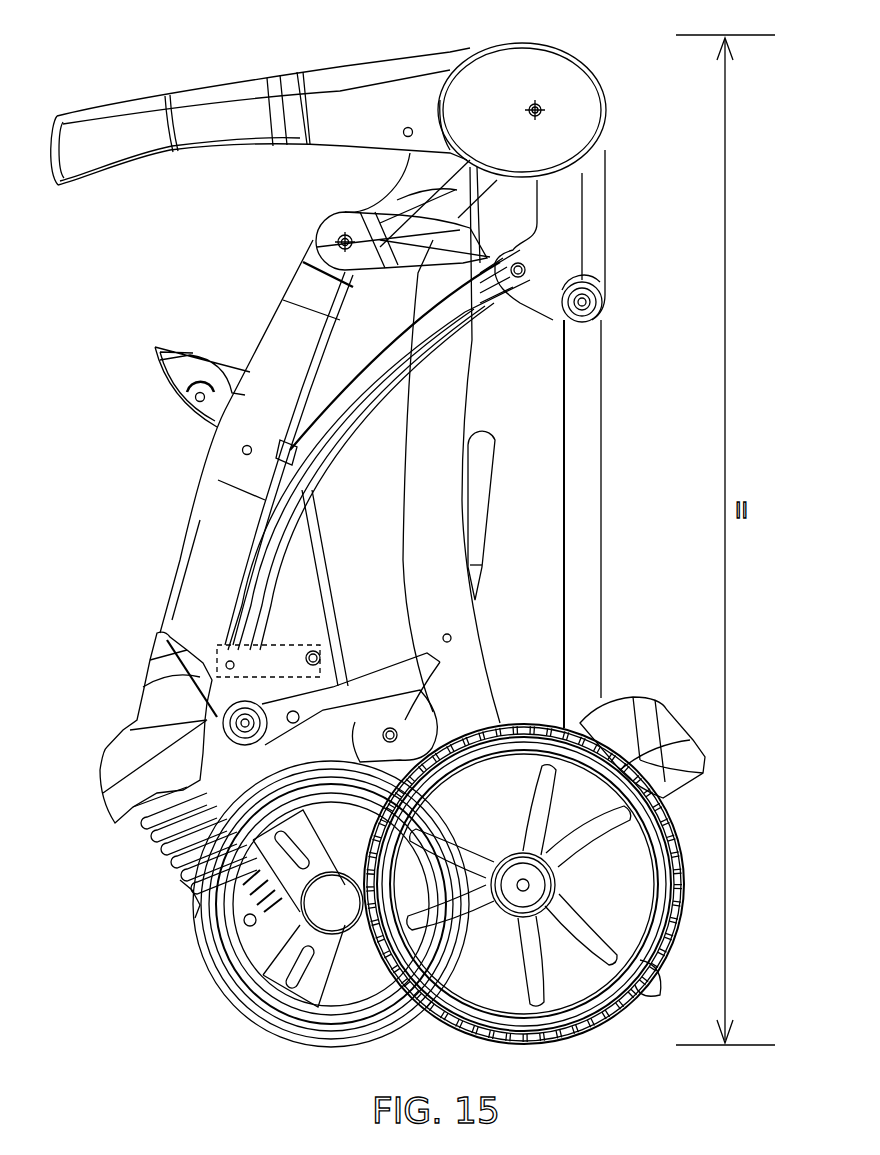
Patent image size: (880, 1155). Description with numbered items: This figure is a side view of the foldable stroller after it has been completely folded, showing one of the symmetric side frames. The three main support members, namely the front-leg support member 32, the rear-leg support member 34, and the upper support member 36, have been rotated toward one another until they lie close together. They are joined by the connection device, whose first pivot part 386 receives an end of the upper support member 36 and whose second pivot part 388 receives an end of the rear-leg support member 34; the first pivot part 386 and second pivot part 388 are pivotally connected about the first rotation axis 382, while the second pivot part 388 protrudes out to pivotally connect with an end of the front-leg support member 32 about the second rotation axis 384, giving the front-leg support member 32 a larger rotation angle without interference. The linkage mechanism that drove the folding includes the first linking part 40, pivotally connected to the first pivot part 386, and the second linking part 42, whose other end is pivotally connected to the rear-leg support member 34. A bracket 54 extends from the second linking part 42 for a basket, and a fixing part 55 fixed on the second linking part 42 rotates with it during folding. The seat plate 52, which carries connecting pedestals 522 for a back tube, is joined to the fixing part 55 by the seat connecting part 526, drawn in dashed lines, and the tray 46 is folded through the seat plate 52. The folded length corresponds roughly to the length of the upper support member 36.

The tray 46 is at (212, 120).
The second pivot part 388 is at (413, 193).
The first rotation axis 382 is at (545, 107).
The second rotation axis 384 is at (338, 240).
The first pivot part 386 is at (567, 230).
The first linking part 40 is at (347, 410).
The upper support member 36 is at (582, 372).
The rear-leg support member 34 is at (440, 415).
The bracket 54 is at (478, 477).
The front-leg support member 32 is at (218, 513).
The seat plate 52 is at (303, 555).
The seat connecting part 526 is at (291, 647).
The second linking part 42 is at (375, 680).
The fixing part 55 is at (145, 688).
The connecting pedestal 522 is at (405, 720).